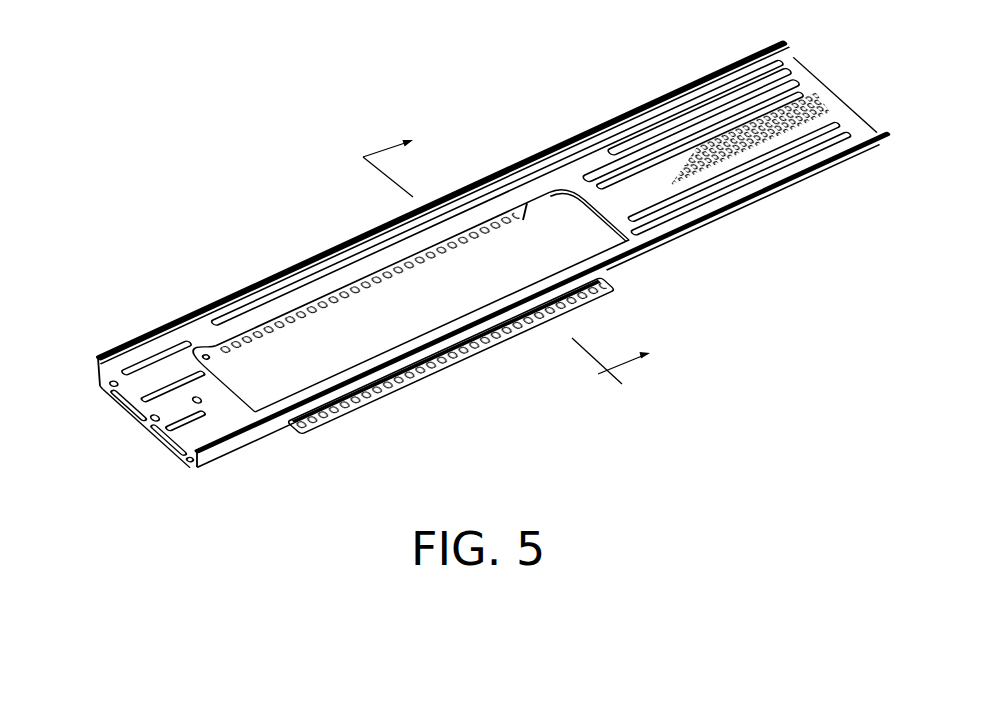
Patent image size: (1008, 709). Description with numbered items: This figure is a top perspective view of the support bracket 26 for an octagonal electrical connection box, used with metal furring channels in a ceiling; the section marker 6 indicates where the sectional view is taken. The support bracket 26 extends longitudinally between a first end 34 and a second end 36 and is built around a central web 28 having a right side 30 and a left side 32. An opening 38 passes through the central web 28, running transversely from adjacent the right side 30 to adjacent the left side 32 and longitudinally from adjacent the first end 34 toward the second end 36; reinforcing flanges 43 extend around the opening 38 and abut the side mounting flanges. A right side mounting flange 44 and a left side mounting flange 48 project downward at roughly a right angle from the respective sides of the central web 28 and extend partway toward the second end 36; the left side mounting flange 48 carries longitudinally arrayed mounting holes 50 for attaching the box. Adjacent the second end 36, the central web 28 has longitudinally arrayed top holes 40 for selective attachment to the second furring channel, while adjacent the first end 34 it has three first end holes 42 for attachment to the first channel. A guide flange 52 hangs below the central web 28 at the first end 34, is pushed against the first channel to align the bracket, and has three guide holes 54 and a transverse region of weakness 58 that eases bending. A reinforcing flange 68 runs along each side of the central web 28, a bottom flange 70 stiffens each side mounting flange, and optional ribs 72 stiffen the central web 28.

The support bracket 26 is at (240, 108).
The central web 28 is at (735, 88).
The central web right side 30 is at (212, 462).
The central web left side 32 is at (213, 312).
The first end 34 is at (130, 387).
The second end 36 is at (846, 95).
The opening 38 is at (553, 213).
The top holes 40 is at (805, 102).
The first end hole 42 is at (123, 417).
The reinforcing flanges 43 is at (213, 352).
The right side mounting flange 44 is at (508, 330).
The left side mounting flange 48 is at (355, 278).
The mounting holes 50 is at (295, 322).
The guide flange 52 is at (110, 400).
The guide hole 54 is at (150, 432).
The region of weakness 58 is at (175, 452).
The reinforcing flange 68 is at (145, 352).
The bottom flange 70 is at (612, 290).
The ribs 72 is at (825, 180).
The section line 6- 6 is at (501, 259).